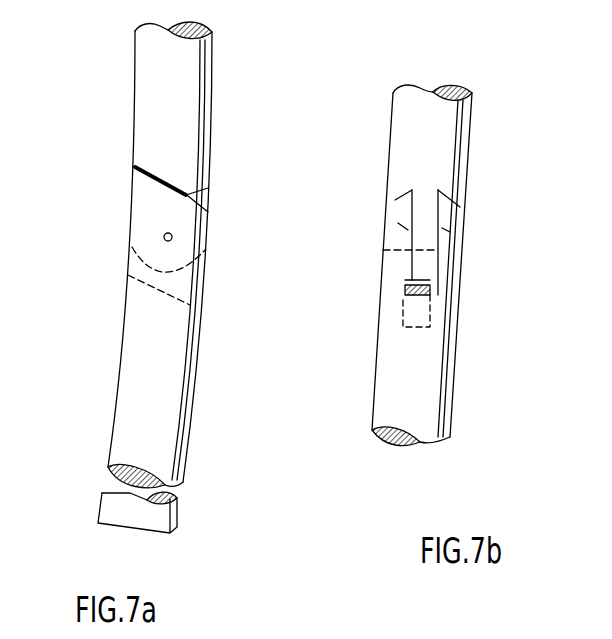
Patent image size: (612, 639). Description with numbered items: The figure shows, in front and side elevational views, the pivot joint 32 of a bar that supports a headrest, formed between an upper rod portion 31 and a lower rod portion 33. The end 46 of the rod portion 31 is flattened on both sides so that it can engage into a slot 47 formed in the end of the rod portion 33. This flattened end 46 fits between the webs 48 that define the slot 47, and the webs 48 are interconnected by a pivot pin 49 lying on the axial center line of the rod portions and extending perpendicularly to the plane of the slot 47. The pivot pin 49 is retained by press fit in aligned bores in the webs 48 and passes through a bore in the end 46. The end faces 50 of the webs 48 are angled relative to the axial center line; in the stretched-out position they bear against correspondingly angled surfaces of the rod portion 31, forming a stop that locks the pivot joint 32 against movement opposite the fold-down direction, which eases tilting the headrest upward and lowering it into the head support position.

In FIG. 7A, the rod portion 31 is at (200, 97).
In FIG. 7B, the rod portion 31 is at (455, 134).
In FIG. 7A, the pivot joint 32 is at (178, 249).
In FIG. 7B, the pivot joint 32 is at (380, 261).
In FIG. 7A, the rod portion 33 is at (168, 438).
In FIG. 7B, the rod portion 33 is at (433, 408).
In FIG. 7B, the end 46 is at (430, 290).
In FIG. 7B, the slot 47 is at (418, 302).
In FIG. 7B, the webs 48 is at (385, 232).
In FIG. 7A, the pivot pin 49 is at (163, 235).
In FIG. 7B, the pivot pin 49 is at (383, 260).
In FIG. 7A, the end faces 50 is at (183, 192).
In FIG. 7B, the end faces 50 is at (397, 206).